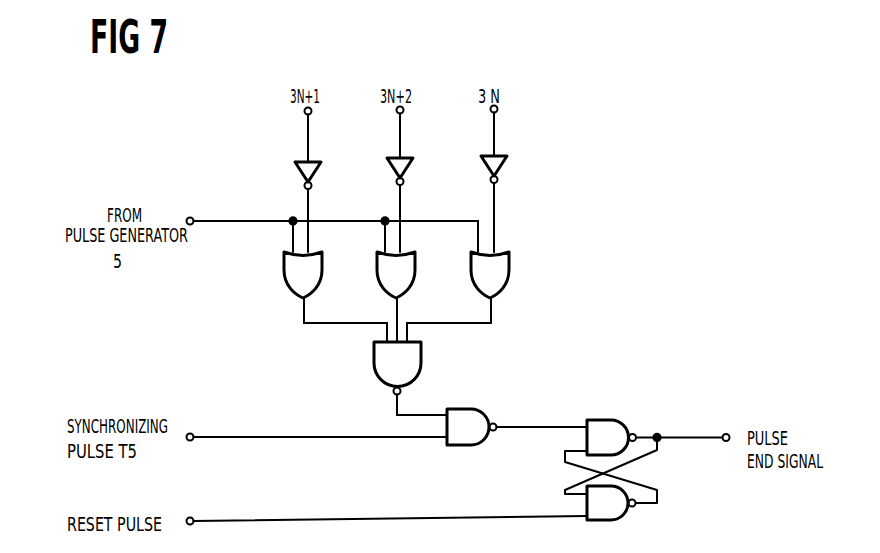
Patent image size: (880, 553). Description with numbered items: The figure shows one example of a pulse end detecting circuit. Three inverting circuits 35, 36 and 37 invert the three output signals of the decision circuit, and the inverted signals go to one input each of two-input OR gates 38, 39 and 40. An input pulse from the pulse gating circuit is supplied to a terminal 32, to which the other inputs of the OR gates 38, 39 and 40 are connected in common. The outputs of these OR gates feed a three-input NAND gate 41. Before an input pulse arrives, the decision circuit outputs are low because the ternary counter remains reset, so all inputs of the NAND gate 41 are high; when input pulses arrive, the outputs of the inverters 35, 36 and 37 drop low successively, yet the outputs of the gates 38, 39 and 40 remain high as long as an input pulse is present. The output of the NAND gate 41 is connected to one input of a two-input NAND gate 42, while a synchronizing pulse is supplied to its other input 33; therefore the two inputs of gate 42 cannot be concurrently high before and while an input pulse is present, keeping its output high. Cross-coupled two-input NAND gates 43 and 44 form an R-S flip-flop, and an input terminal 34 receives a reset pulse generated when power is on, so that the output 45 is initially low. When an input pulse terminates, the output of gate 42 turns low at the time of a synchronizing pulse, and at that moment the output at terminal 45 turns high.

The terminal 32 is at (191, 217).
The input 33 is at (190, 420).
The input terminal 34 is at (190, 504).
The inverting circuit 35 is at (313, 170).
The inverting circuit 36 is at (405, 166).
The inverting circuit 37 is at (499, 164).
The 2-input OR gate 38 is at (317, 288).
The 2-input OR gate 39 is at (410, 288).
The 2-input OR gate 40 is at (504, 288).
The 3-input NAND gate 41 is at (417, 378).
The 2-input NAND gate 42 is at (488, 400).
The 2-input NAND gate 43 is at (617, 420).
The 2-input NAND gate 44 is at (616, 519).
The output 45 is at (728, 420).